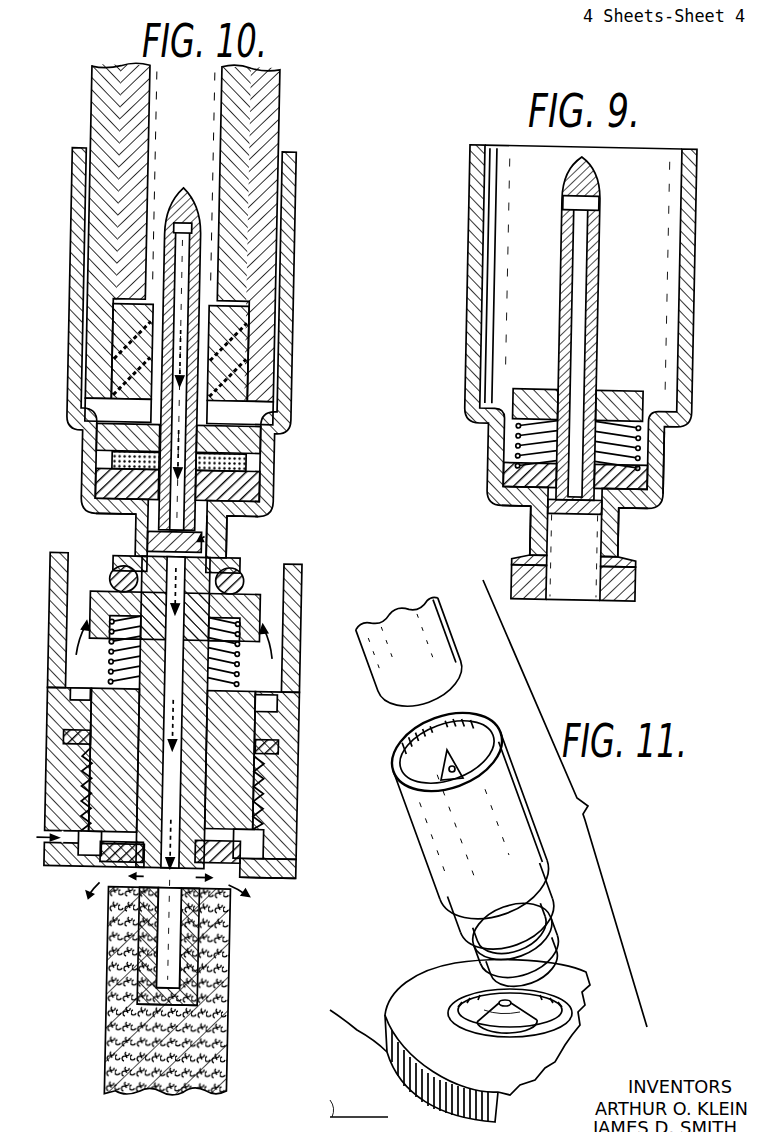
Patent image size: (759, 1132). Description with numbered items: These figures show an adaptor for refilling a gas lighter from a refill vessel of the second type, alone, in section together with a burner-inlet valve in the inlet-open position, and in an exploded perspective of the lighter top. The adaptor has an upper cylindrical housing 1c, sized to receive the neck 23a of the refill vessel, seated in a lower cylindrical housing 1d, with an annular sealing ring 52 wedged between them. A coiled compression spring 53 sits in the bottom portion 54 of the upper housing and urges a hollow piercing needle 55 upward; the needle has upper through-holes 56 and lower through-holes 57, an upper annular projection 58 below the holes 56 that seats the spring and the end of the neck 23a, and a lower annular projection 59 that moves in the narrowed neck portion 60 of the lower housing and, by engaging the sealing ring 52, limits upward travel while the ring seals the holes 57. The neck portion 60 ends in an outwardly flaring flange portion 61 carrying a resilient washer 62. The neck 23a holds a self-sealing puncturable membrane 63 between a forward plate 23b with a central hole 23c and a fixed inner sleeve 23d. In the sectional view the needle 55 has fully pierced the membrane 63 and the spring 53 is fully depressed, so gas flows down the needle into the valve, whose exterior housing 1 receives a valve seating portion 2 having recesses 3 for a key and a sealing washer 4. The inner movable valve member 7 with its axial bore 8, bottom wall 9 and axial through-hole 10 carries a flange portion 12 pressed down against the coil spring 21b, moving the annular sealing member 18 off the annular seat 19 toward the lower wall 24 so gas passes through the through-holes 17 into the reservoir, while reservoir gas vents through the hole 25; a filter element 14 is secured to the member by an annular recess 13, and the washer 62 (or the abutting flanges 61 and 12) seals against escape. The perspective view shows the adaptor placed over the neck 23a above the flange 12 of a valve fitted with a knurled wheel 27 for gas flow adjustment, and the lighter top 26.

In FIG. 10, the exterior housing 1 is at (312, 602).
In FIG. 11, the exterior housing 1 is at (467, 1033).
In FIG. 10, the upper cylindrical housing 1c is at (297, 208).
In FIG. 9, the upper cylindrical housing 1c is at (698, 278).
In FIG. 11, the upper cylindrical housing 1c is at (527, 803).
In FIG. 10, the lower cylindrical housing 1d is at (283, 496).
In FIG. 9, the lower cylindrical housing 1d is at (676, 470).
In FIG. 11, the lower cylindrical housing 1d is at (545, 908).
In FIG. 10, the valve seating portion 2 is at (292, 727).
In FIG. 10, the recesses 3 is at (86, 695).
In FIG. 10, the sealing washer 4 is at (292, 747).
In FIG. 10, the inner movable valve member 7 is at (100, 760).
In FIG. 10, the axial bore 8 is at (150, 686).
In FIG. 10, the bottom wall 9 is at (154, 1007).
In FIG. 10, the axial through-hole 10 is at (208, 998).
In FIG. 10, the flange portion 12 is at (118, 598).
In FIG. 11, the flange portion 12 is at (447, 1014).
In FIG. 10, the annular recess 13 is at (216, 956).
In FIG. 10, the filter element 14 is at (238, 1046).
In FIG. 10, the through-holes 17 is at (204, 876).
In FIG. 10, the annular sealing member 18 is at (282, 860).
In FIG. 10, the annular seat 19 is at (249, 844).
In FIG. 10, the coil spring 21b is at (240, 690).
In FIG. 10, the neck of the refill vessel 23a is at (92, 98).
In FIG. 11, the neck of the refill vessel 23a is at (451, 634).
In FIG. 10, the forward plate 23b is at (130, 405).
In FIG. 10, the central hole 23c is at (210, 412).
In FIG. 10, the fixed inner sleeve 23d is at (248, 108).
In FIG. 10, the lower wall 24 is at (272, 880).
In FIG. 10, the hole 25 is at (56, 843).
In FIG. 11, the support surface 26 is at (340, 1084).
In FIG. 11, the knurled wheel 27 is at (416, 992).
In FIG. 9, the annular sealing ring 52 is at (672, 494).
In FIG. 10, the coiled compression spring 53 is at (262, 470).
In FIG. 9, the coiled compression spring 53 is at (523, 456).
In FIG. 10, the bottom portion 54 is at (108, 477).
In FIG. 9, the bottom portion 54 is at (510, 479).
In FIG. 10, the hollow piercing needle 55 is at (166, 262).
In FIG. 9, the hollow piercing needle 55 is at (602, 228).
In FIG. 11, the hollow piercing needle 55 is at (465, 762).
In FIG. 10, the upper through-holes 56 is at (205, 238).
In FIG. 9, the upper through-holes 56 is at (566, 204).
In FIG. 11, the upper through-holes 56 is at (447, 768).
In FIG. 10, the lower through-holes 57 is at (218, 537).
In FIG. 9, the lower through-holes 57 is at (626, 519).
In FIG. 10, the upper annular projection 58 is at (252, 443).
In FIG. 9, the upper annular projection 58 is at (652, 406).
In FIG. 10, the lower annular projection 59 is at (152, 548).
In FIG. 9, the lower annular projection 59 is at (578, 520).
In FIG. 10, the narrowed neck portion 60 is at (236, 553).
In FIG. 9, the narrowed neck portion 60 is at (538, 536).
In FIG. 11, the narrowed neck portion 60 is at (545, 957).
In FIG. 10, the outwardly flaring flange portion 61 is at (123, 568).
In FIG. 9, the outwardly flaring flange portion 61 is at (646, 568).
In FIG. 11, the outwardly flaring flange portion 61 is at (487, 953).
In FIG. 10, the resilient washer 62 is at (252, 578).
In FIG. 9, the resilient washer 62 is at (647, 592).
In FIG. 11, the resilient washer 62 is at (492, 972).
In FIG. 10, the self-sealing puncturable membrane 63 is at (250, 352).